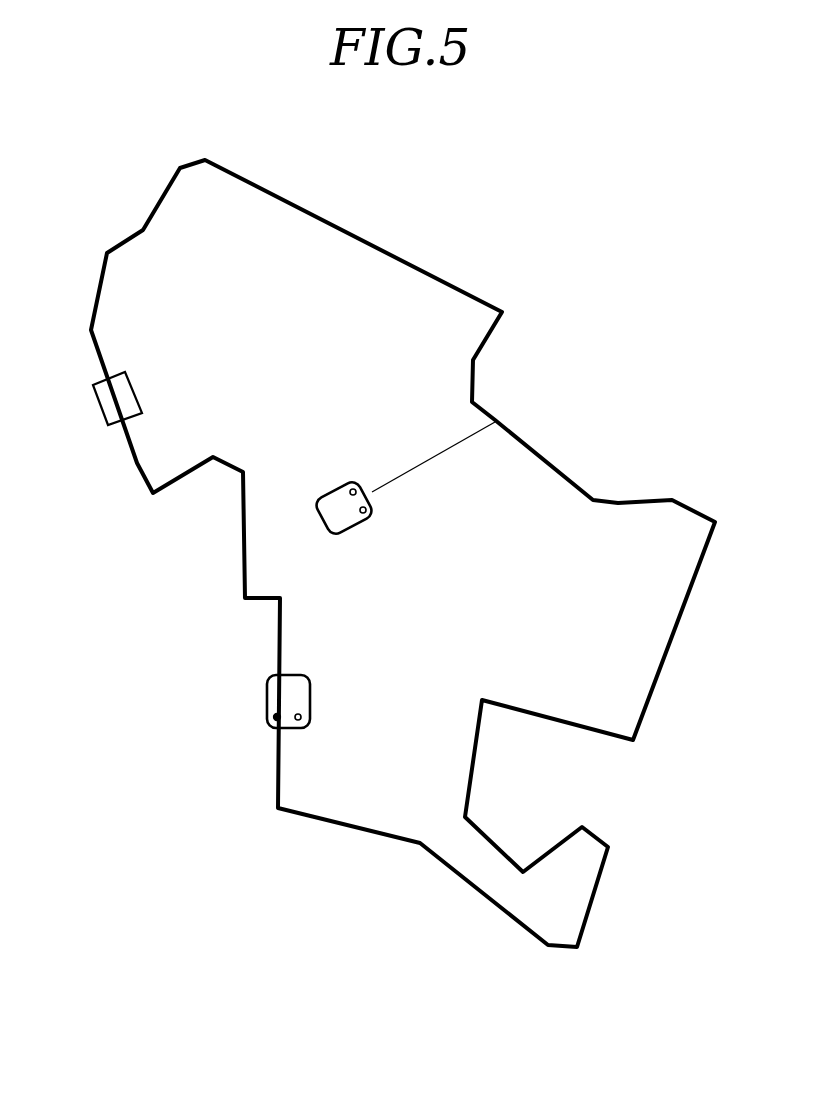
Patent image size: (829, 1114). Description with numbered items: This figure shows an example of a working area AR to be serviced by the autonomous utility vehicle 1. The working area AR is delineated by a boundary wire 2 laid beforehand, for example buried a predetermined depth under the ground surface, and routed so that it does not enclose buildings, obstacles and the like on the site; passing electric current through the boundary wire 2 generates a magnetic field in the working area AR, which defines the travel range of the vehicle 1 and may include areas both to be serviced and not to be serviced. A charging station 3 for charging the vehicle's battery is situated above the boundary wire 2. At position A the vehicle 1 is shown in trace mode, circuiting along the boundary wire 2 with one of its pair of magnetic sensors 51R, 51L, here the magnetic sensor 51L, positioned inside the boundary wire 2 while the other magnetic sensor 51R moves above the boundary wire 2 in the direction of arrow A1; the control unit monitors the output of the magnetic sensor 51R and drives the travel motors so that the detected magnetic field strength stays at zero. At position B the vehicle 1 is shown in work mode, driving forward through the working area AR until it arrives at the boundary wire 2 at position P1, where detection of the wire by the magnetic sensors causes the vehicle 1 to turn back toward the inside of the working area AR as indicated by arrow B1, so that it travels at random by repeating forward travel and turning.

The vehicle 1 is at (312, 690).
The boundary wire 2 is at (277, 193).
The charging station 3 is at (93, 388).
The magnetic sensor 51L is at (300, 718).
The magnetic sensor 51R is at (277, 718).
The vehicle position in trace mode A is at (258, 665).
The vehicle position in work mode B is at (326, 471).
The working area AR is at (404, 284).
The position P1 is at (496, 418).
The arrow A1 is at (262, 745).
The arrow B1 is at (495, 422).